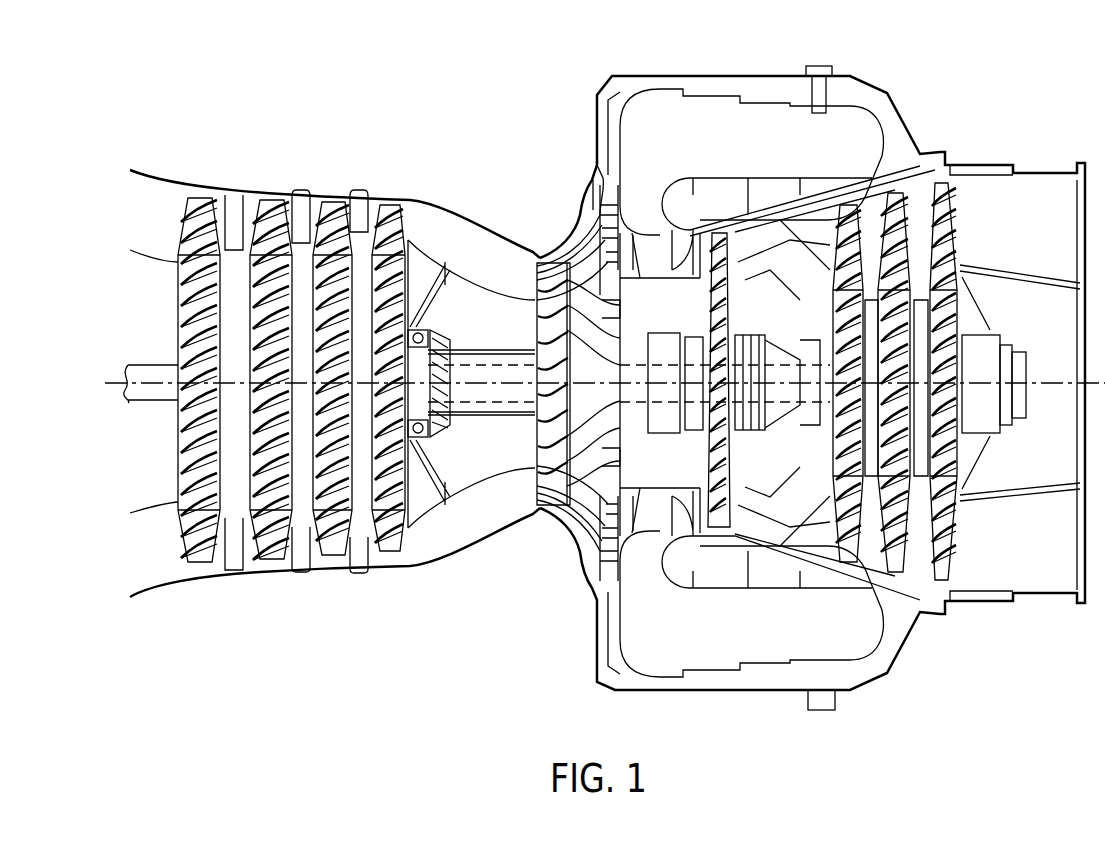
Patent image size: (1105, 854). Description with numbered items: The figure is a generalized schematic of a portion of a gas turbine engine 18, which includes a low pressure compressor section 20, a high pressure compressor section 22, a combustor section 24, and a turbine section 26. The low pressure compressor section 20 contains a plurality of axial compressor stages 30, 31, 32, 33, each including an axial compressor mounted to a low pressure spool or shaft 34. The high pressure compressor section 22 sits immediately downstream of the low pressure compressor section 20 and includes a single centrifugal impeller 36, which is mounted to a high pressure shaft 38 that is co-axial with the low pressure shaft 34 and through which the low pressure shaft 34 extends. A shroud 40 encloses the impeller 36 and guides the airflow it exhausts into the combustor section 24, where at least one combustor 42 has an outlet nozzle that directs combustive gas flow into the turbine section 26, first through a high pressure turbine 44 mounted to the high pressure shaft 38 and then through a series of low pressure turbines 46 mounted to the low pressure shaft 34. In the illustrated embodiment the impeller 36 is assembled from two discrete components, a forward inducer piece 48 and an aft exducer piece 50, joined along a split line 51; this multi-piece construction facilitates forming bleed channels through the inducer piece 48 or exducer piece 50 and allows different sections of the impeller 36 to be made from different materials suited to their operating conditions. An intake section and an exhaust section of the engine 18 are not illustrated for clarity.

The gas turbine engine 18 is at (287, 72).
The low pressure compressor section 20 is at (410, 612).
The high pressure compressor section 22 is at (413, 612).
The combustor section 24 is at (903, 50).
The turbine section 26 is at (1095, 727).
The axial compressor stage 30 is at (232, 190).
The axial compressor stage 31 is at (297, 190).
The axial compressor stage 32 is at (358, 190).
The axial compressor stage 33 is at (420, 190).
The low pressure shaft 34 is at (148, 405).
The centrifugal impeller 36 is at (565, 525).
The high pressure shaft 38 is at (470, 420).
The shroud 40 is at (578, 225).
The combustor 42 is at (758, 151).
The high pressure turbine 44 is at (708, 302).
The low pressure turbines 46 is at (860, 208).
The forward inducer piece 48 is at (543, 262).
The aft exducer piece 50 is at (594, 184).
The split line 51 is at (535, 318).